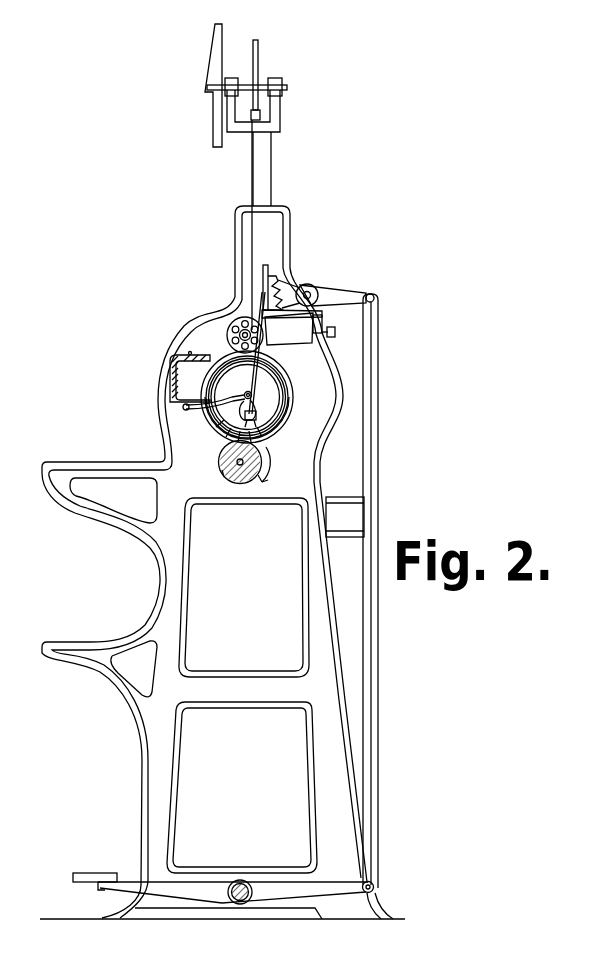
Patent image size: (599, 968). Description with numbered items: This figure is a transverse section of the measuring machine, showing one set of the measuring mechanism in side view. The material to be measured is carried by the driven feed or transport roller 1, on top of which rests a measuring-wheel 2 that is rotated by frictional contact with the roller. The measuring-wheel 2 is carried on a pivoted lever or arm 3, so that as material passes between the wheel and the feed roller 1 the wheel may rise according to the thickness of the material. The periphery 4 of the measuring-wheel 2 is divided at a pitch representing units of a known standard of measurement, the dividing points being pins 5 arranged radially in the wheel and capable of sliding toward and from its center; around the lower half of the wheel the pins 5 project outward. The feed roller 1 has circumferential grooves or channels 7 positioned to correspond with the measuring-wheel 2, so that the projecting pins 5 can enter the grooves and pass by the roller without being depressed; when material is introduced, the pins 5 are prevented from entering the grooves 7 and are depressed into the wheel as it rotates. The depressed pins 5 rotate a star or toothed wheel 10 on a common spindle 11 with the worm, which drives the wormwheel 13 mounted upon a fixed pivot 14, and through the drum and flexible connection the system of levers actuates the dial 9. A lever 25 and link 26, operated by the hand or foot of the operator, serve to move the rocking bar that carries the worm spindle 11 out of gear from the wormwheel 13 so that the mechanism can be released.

The feed or transport roller 1 is at (219, 462).
The measuring-wheels 2 is at (287, 396).
The pivoted levers or arms 3 is at (219, 398).
The peripheries 4 is at (291, 418).
The pins 5 is at (221, 431).
The circumferential grooves or channels 7 is at (224, 477).
The dial 9 is at (212, 124).
The star or toothed wheel 10 is at (265, 411).
The spindle 11 is at (259, 378).
The wormwheel 13 is at (233, 320).
The fixed pivot 14 is at (238, 337).
The lever 25 is at (348, 293).
The link 26 is at (372, 447).